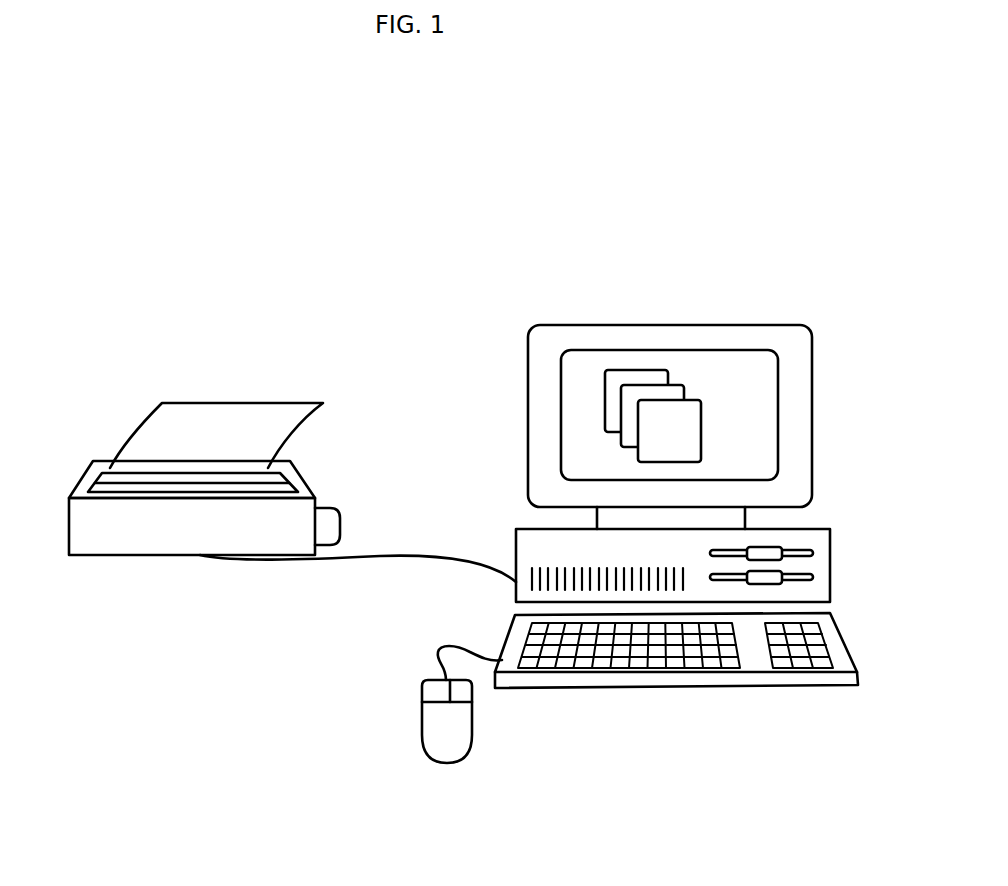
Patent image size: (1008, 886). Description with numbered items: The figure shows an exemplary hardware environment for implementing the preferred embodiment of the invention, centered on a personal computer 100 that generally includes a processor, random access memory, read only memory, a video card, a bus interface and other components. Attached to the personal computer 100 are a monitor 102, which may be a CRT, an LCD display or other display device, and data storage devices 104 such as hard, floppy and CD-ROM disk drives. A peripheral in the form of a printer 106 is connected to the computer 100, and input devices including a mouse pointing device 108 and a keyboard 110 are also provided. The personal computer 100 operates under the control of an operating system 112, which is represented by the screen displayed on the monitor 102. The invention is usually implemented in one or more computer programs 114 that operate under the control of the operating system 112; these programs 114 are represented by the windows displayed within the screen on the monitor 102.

The personal computer 100 is at (516, 529).
The monitor 102 is at (714, 393).
The data storage devices 104 is at (830, 560).
The printer 106 is at (122, 547).
The mouse pointing device 108 is at (472, 740).
The keyboard 110 is at (747, 686).
The operating system 112 is at (699, 369).
The computer programs 114 is at (645, 368).